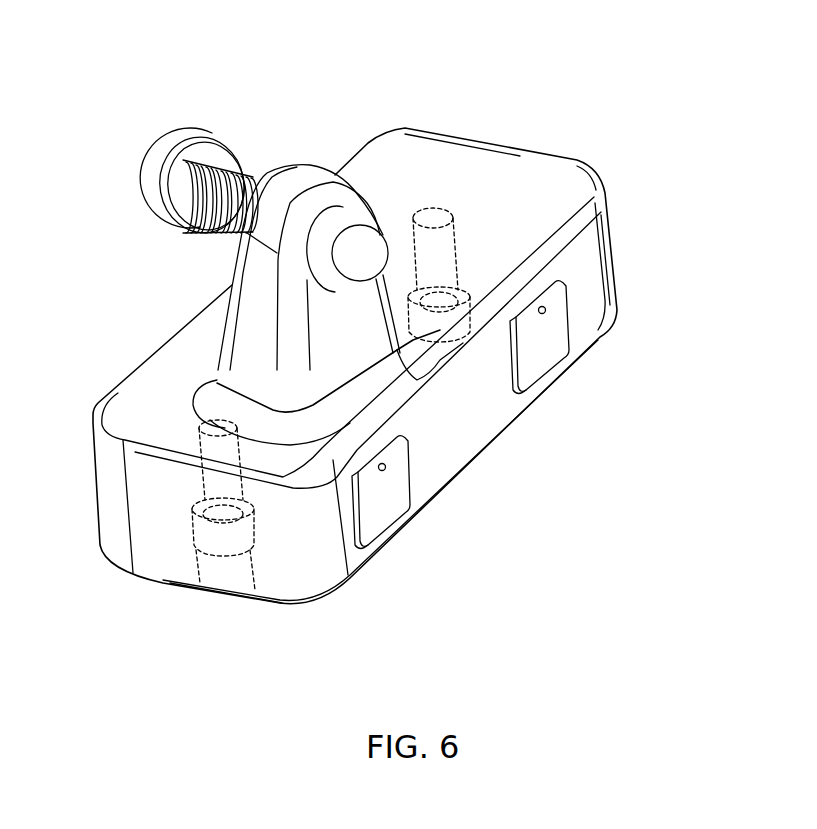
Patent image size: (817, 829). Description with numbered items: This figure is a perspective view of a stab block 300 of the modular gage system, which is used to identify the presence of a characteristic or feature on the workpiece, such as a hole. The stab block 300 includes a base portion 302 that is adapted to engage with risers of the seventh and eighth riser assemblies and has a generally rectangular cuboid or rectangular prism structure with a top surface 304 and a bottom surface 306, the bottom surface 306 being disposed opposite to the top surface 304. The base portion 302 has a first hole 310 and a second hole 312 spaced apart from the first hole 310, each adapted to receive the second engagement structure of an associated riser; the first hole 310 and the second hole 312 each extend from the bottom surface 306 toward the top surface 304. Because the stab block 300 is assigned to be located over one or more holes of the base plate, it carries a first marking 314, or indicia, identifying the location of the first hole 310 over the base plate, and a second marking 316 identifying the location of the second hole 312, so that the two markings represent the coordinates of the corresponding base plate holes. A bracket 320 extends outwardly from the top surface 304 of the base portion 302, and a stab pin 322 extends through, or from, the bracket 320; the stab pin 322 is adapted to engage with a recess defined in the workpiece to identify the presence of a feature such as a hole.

The stab block 300 is at (670, 74).
The base portion 302 is at (482, 432).
The top surface 304 is at (440, 138).
The bottom surface 306 is at (300, 603).
The first hole 310 is at (211, 530).
The second hole 312 is at (433, 214).
The first marking 314 is at (385, 519).
The second marking 316 is at (566, 353).
The bracket 320 is at (252, 307).
The stab pin 322 is at (183, 147).